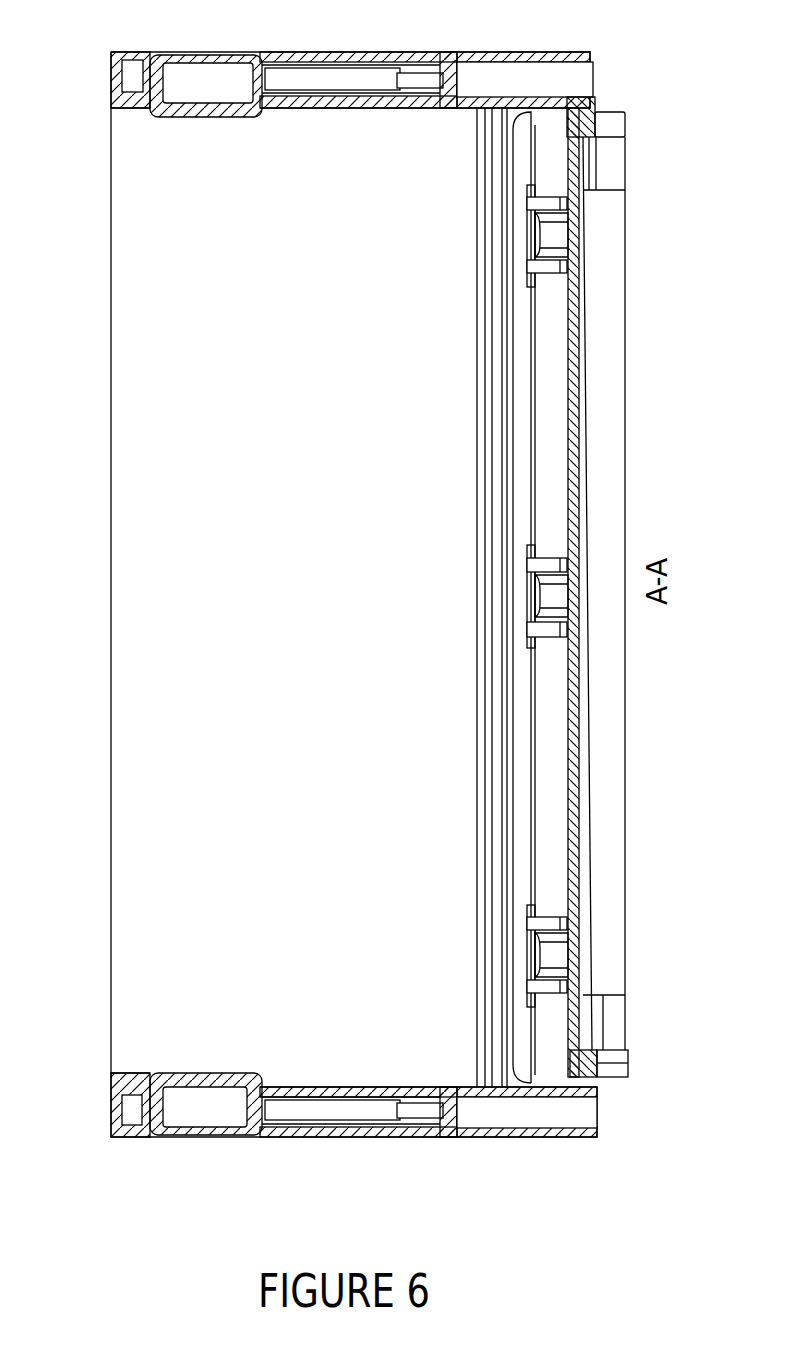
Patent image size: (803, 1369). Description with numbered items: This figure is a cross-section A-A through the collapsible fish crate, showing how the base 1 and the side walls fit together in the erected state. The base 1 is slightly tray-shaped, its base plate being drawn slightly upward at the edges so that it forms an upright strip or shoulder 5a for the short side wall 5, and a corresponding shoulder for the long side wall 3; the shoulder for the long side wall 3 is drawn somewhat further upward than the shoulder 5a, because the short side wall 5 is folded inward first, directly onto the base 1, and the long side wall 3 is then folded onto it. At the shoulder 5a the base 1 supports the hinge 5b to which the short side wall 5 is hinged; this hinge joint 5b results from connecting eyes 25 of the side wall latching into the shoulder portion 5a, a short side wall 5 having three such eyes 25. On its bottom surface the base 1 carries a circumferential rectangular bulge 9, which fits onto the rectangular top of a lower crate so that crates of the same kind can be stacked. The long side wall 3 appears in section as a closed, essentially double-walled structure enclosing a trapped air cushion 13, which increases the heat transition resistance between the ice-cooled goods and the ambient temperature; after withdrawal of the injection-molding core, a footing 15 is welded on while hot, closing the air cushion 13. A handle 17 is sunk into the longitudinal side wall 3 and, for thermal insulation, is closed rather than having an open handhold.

The base 1 is at (575, 797).
The long side wall 3 is at (275, 1137).
The short side wall 5 is at (130, 525).
The shoulder 5a is at (565, 427).
The hinge 5b is at (578, 265).
The circumferential rectangular bulge 9 is at (610, 128).
The trapped air cushion 13 is at (335, 80).
The footing 15 is at (436, 62).
The handle 17 is at (192, 78).
The connecting eye 25 is at (558, 232).